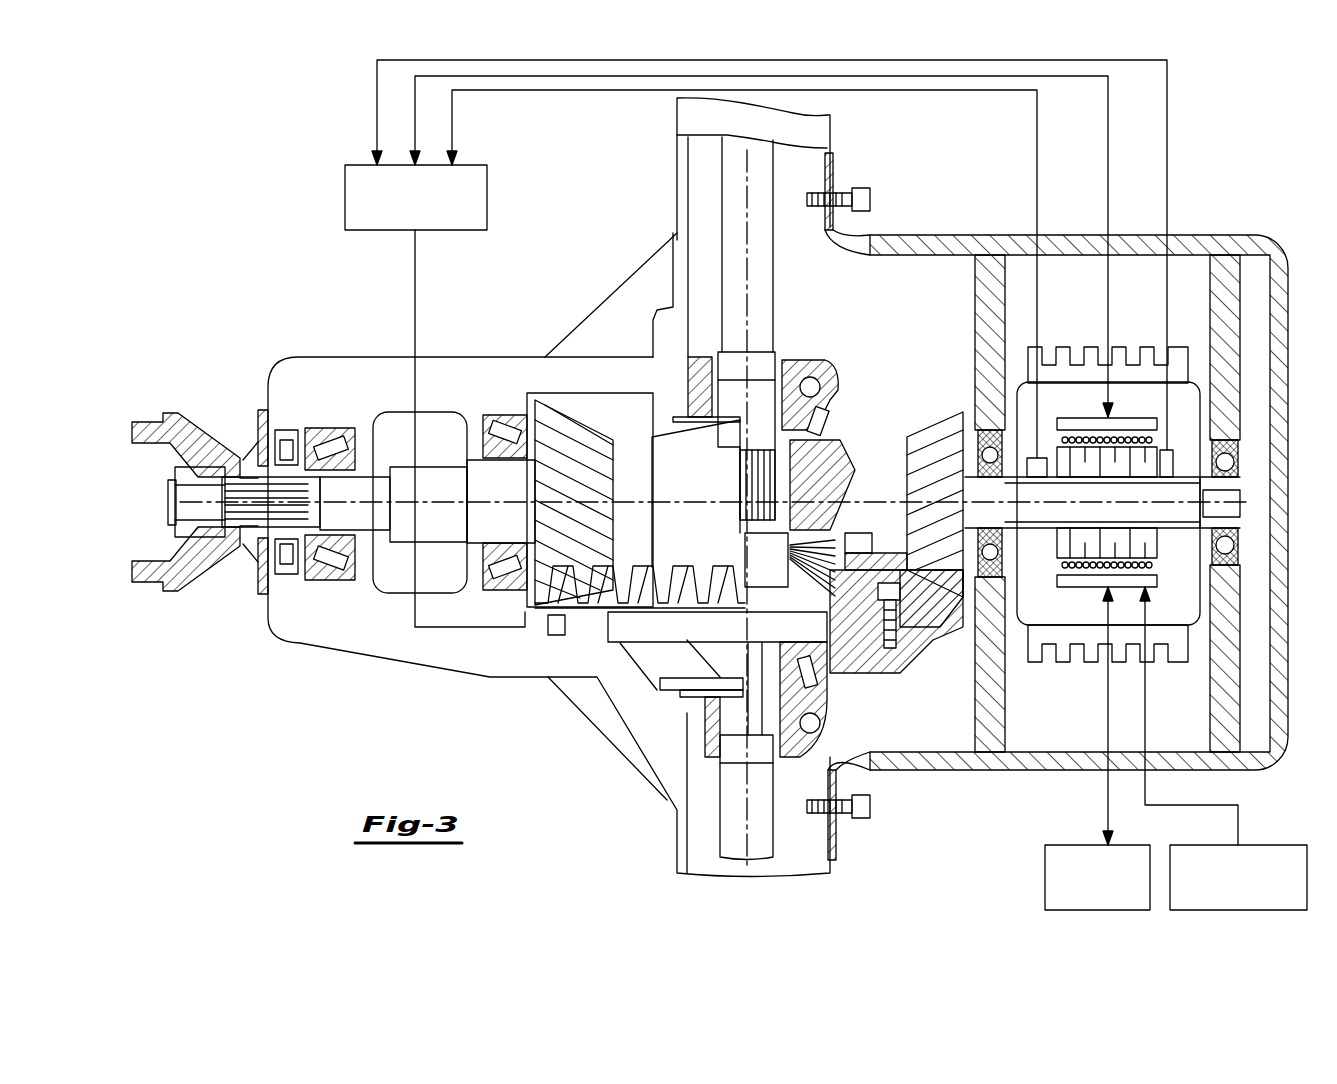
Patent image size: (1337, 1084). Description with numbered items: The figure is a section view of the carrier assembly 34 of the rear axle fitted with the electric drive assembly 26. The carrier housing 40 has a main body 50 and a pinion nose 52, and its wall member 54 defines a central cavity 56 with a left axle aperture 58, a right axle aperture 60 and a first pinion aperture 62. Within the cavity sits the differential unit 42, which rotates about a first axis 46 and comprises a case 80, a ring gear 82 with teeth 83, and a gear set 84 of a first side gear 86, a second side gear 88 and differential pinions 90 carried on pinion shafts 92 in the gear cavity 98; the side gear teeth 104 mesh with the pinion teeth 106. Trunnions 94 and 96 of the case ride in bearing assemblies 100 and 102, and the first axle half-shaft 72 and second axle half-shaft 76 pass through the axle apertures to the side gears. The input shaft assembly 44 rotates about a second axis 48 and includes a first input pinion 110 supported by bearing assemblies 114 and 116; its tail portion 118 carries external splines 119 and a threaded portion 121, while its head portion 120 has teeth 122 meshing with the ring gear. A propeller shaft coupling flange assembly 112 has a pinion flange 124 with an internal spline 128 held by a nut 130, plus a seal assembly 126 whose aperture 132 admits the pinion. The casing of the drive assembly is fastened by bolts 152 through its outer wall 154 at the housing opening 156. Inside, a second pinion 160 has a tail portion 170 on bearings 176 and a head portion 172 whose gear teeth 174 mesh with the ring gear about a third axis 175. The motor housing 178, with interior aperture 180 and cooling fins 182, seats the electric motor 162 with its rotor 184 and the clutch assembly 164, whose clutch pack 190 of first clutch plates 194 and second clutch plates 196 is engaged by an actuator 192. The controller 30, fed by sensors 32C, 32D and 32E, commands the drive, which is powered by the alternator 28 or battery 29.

The electric drive assembly 26 is at (1230, 225).
The alternator 28 is at (1272, 845).
The battery 29 is at (1083, 845).
The controller 30 is at (345, 200).
The sensor 32C is at (540, 628).
The sensor 32D is at (1037, 458).
The sensor 32E is at (1167, 450).
The carrier assembly 34 is at (610, 240).
The carrier housing 40 is at (408, 665).
The differential unit 42 is at (812, 335).
The input shaft assembly 44 is at (335, 636).
The first axis 46 is at (760, 275).
The second axis 48 is at (440, 530).
The main body 50 is at (625, 738).
The pinion nose 52 is at (385, 357).
The wall member 54 is at (480, 357).
The central cavity 56 is at (630, 393).
The left axle aperture 58 is at (790, 873).
The right axle aperture 60 is at (817, 117).
The first pinion aperture 62 is at (300, 575).
The first axle half-shaft 72 is at (745, 850).
The second axle half-shaft 76 is at (733, 157).
The case 80 is at (710, 440).
The ring gear 82 is at (558, 635).
The teeth 83 is at (660, 570).
The gear set 84 is at (852, 462).
The first side gear 86 is at (818, 668).
The second side gear 88 is at (820, 455).
The differential pinions 90 is at (850, 510).
The pinion shafts 92 is at (860, 525).
The trunnion 94 is at (825, 680).
The trunnion 96 is at (832, 412).
The gear cavity 98 is at (740, 540).
The bearing assembly 100 is at (820, 720).
The bearing assembly 102 is at (810, 400).
The teeth 104 is at (745, 630).
The teeth 106 is at (830, 620).
The first input pinion 110 is at (437, 440).
The propeller shaft coupling flange assembly 112 is at (215, 372).
The bearing assembly 114 is at (503, 430).
The bearing assembly 116 is at (305, 440).
The tail portion 118 is at (375, 545).
The external splines 119 is at (310, 494).
The head portion 120 is at (610, 448).
The externally threaded portion 121 is at (180, 495).
The teeth 122 is at (535, 488).
The pinion flange 124 is at (150, 422).
The seal assembly 126 is at (253, 412).
The internal spline 128 is at (243, 458).
The nut 130 is at (185, 530).
The aperture 132 is at (268, 598).
The bolts 152 is at (870, 200).
The outer wall 154 is at (980, 770).
The opening 156 is at (836, 240).
The second pinion 160 is at (1210, 470).
The electric motor 162 is at (1162, 592).
The clutch assembly 164 is at (1175, 537).
The second pinion tail portion 170 is at (1070, 560).
The second pinion head portion 172 is at (950, 415).
The gear teeth 174 is at (975, 430).
The third axis 175 is at (900, 440).
The bearings 176 is at (1005, 440).
The motor housing 178 is at (1108, 400).
The interior aperture 180 is at (1060, 520).
The cooling fins 182 is at (1065, 347).
The rotor 184 is at (1160, 580).
The clutch pack 190 is at (1060, 552).
The actuator 192 is at (1155, 470).
The first clutch plates 194 is at (1130, 460).
The second clutch plates 196 is at (1075, 455).